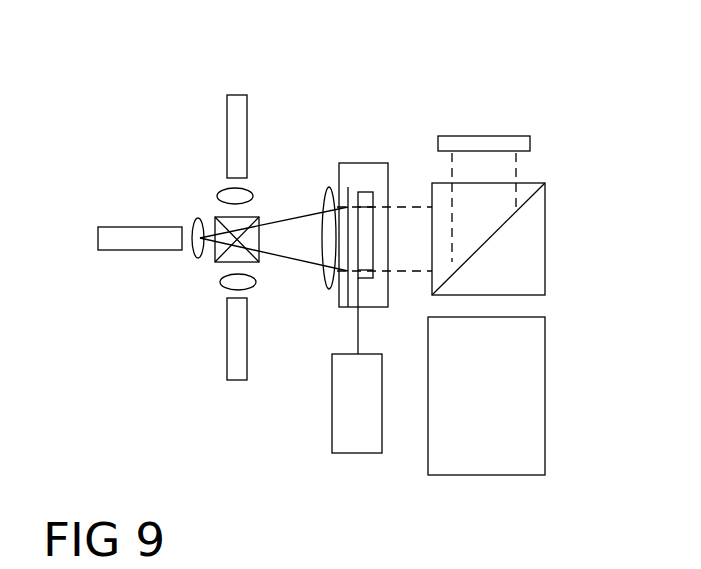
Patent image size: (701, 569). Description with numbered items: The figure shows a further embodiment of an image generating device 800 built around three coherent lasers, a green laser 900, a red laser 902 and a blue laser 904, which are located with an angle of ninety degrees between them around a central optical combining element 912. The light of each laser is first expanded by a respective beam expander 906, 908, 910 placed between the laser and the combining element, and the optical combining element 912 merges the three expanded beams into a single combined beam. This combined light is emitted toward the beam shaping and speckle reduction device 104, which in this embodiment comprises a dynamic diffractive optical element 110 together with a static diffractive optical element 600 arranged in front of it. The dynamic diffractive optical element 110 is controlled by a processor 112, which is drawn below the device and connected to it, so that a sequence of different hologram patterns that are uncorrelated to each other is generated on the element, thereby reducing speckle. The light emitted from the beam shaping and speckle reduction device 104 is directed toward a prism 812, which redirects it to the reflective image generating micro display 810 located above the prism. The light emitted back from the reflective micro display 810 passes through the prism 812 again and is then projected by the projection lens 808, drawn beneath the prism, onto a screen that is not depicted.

The image generating device 800 is at (115, 49).
The green laser 900 is at (247, 96).
The red laser 902 is at (102, 252).
The blue laser 904 is at (238, 386).
The beam expander 906 is at (258, 189).
The beam expander 908 is at (197, 222).
The beam expander 910 is at (257, 286).
The optical combining element 912 is at (212, 267).
The static diffractive optical element 600 is at (338, 306).
The beam shaping and speckle reduction device 104 is at (373, 165).
The dynamic diffractive optical element 110 is at (364, 280).
The processor 112 is at (356, 460).
The reflective image generating micro display 810 is at (498, 135).
The prism 812 is at (548, 246).
The projection lens 808 is at (547, 413).